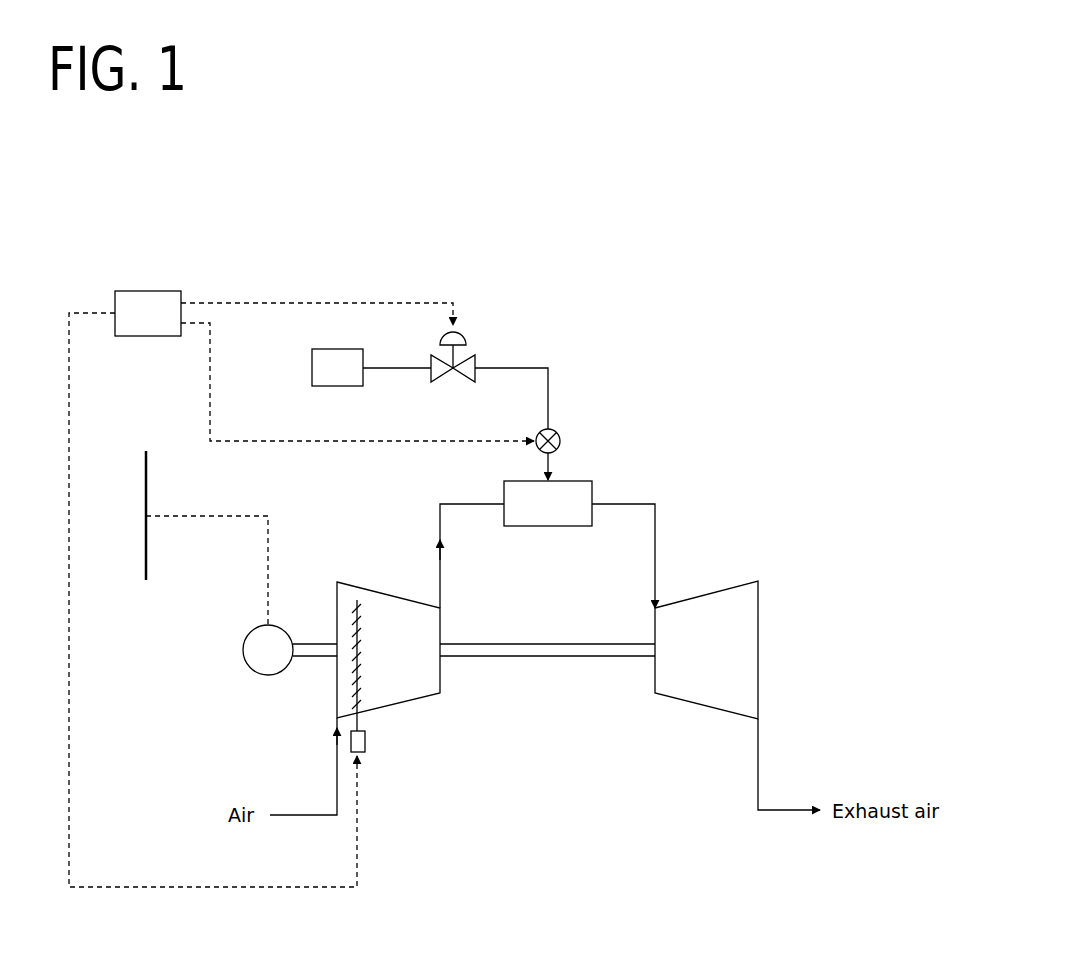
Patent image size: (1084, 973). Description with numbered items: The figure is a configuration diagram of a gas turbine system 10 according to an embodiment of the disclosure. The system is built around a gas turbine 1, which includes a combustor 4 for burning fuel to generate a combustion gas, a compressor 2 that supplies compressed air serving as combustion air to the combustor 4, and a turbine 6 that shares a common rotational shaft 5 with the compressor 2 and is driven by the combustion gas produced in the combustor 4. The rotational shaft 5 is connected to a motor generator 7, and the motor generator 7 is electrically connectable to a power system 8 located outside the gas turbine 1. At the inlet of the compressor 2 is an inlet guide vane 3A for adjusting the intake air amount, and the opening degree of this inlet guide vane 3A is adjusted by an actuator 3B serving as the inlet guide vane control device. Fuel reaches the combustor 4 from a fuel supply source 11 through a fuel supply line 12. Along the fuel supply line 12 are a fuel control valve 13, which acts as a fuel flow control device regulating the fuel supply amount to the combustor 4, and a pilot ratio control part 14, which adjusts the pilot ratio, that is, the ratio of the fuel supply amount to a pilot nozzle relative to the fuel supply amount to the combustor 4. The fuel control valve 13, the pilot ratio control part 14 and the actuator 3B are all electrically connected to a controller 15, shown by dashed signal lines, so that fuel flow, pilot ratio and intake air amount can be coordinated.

The gas turbine 1 is at (657, 448).
The compressor 2 is at (406, 598).
The inlet guide vane 3A is at (358, 606).
The actuator 3B is at (365, 742).
The combustor 4 is at (580, 481).
The rotational shaft 5 is at (549, 658).
The turbine 6 is at (703, 592).
The motor generator 7 is at (271, 676).
The power system 8 is at (146, 465).
The gas turbine system 10 is at (252, 247).
The fuel supply source 11 is at (312, 368).
The fuel supply line 12 is at (400, 370).
The fuel control valve 13 is at (467, 334).
The pilot ratio control part 14 is at (558, 432).
The controller 15 is at (148, 336).